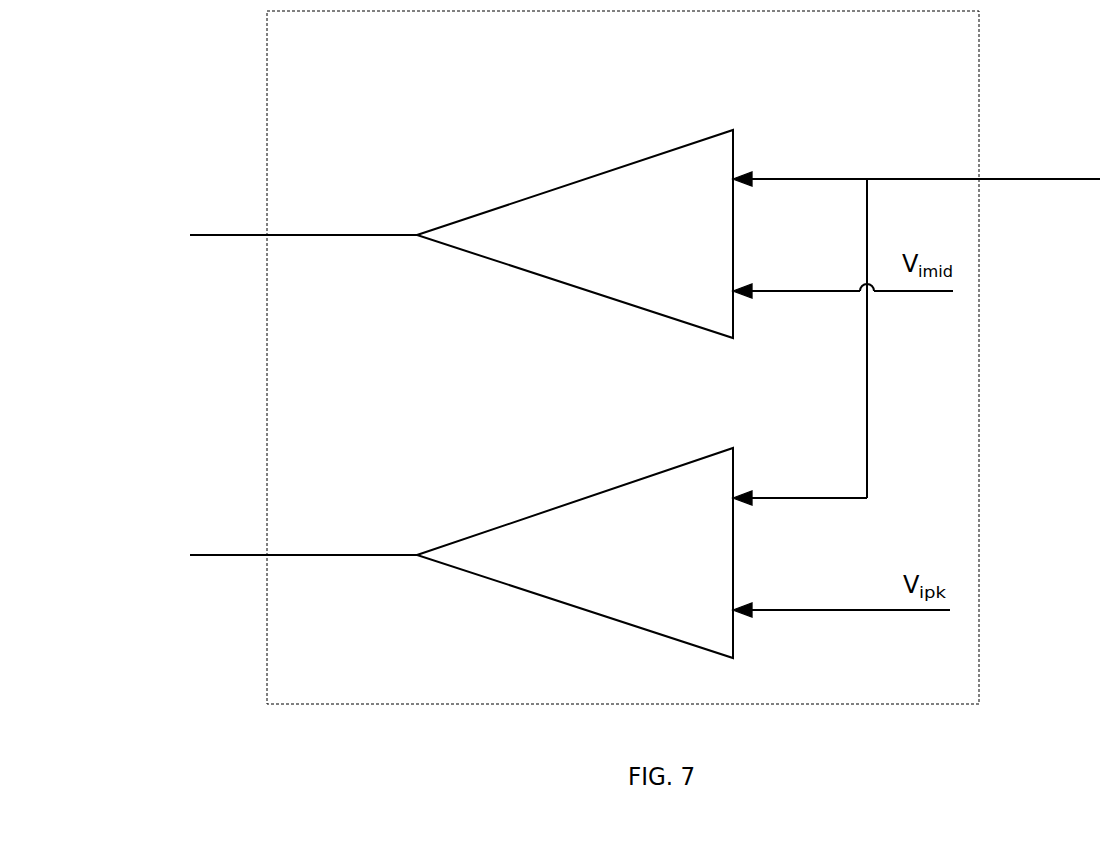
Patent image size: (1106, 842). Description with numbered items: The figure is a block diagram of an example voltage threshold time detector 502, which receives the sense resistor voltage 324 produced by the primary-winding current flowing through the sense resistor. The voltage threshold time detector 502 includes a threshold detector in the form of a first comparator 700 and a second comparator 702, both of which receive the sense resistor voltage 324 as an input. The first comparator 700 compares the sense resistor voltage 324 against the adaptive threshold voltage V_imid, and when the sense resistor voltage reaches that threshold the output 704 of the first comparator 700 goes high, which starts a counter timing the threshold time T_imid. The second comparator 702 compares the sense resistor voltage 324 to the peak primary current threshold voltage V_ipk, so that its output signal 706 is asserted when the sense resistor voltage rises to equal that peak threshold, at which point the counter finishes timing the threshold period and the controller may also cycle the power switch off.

The voltage threshold time detector 502 is at (705, 91).
The first comparator 700 is at (647, 264).
The second comparator 702 is at (657, 582).
The output of first comparator 704 is at (358, 233).
The output signal from second comparator 706 is at (358, 553).
The sense resistor voltage 324 is at (1070, 178).